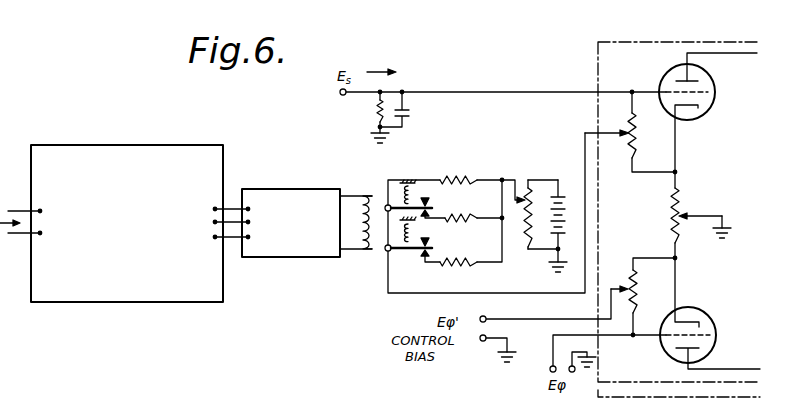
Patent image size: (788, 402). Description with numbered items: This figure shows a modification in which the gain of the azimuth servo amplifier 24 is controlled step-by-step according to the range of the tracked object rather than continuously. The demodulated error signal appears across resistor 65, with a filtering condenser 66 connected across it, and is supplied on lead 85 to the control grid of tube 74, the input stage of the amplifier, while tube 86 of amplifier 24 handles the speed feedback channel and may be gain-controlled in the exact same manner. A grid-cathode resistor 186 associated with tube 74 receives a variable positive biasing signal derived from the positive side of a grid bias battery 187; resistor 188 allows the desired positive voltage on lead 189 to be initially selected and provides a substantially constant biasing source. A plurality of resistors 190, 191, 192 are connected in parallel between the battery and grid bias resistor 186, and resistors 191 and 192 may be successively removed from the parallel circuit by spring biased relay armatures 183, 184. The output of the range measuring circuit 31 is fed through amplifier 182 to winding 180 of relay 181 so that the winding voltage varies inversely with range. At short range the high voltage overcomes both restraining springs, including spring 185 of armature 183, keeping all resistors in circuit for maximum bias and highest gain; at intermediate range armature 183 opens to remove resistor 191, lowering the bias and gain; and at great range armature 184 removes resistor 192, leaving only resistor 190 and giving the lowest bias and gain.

The range measuring circuit 31 is at (225, 152).
The amplifier 182 is at (272, 258).
The relay 181 is at (370, 178).
The winding 180 is at (362, 248).
The relay armature 183 is at (389, 204).
The relay armature 184 is at (398, 259).
The restraining spring 185 is at (413, 196).
The grid-cathode resistor 186 is at (432, 240).
The resistor 190 is at (465, 165).
The resistor 191 is at (448, 216).
The resistor 192 is at (455, 264).
The lead 189 is at (515, 178).
The resistor 188 is at (533, 198).
The grid bias battery 187 is at (568, 217).
The resistor 65 is at (375, 113).
The filtering condenser 66 is at (412, 108).
The lead 85 is at (560, 91).
The servo amplifier 24 is at (676, 42).
The tube 74 is at (717, 92).
The tube 86 is at (708, 316).